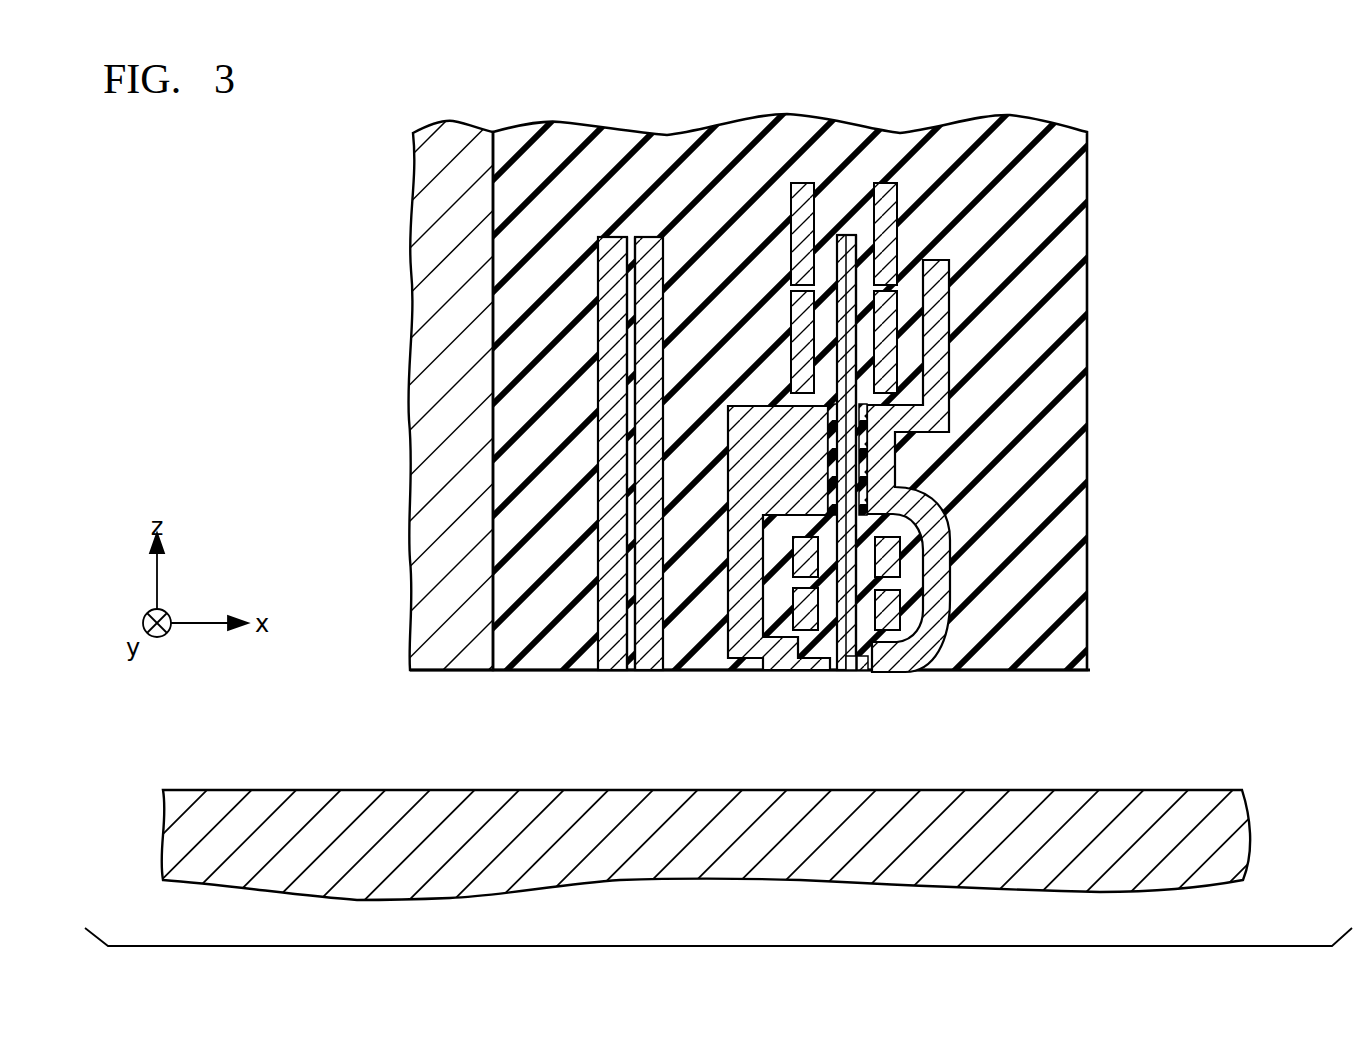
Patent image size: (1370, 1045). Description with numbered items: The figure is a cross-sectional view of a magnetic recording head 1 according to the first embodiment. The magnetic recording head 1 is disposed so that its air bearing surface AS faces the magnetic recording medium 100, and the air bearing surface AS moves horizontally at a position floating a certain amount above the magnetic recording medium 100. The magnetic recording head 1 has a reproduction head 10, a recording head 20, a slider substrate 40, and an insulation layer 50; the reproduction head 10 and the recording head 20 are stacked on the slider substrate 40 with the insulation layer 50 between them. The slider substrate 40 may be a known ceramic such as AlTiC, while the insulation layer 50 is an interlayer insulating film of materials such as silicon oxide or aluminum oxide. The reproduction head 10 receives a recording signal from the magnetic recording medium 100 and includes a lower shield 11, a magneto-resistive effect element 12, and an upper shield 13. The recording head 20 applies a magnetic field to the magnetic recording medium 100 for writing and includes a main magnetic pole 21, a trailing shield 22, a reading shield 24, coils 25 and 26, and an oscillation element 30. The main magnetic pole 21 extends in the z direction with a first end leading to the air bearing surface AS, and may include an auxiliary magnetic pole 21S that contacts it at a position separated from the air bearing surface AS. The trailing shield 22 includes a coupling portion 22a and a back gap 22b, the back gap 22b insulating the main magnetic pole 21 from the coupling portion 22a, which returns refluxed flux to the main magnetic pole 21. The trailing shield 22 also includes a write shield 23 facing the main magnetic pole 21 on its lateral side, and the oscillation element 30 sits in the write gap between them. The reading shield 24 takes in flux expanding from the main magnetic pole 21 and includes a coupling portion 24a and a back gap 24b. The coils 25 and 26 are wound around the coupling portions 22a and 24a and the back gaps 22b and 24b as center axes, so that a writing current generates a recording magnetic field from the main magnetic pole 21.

The magnetic recording head 1 is at (685, 404).
The reproduction head 10 is at (632, 507).
The lower shield 11 is at (612, 672).
The magneto-resistive effect element 12 is at (632, 482).
The upper shield 13 is at (655, 672).
The recording head 20 is at (947, 476).
The main magnetic pole 21 is at (976, 481).
The auxiliary magnetic pole 21S is at (858, 362).
The trailing shield 22 is at (1012, 494).
The coupling portion 22a is at (877, 470).
The back gap 22b is at (862, 500).
The write shield 23 is at (863, 672).
The reading shield 24 is at (947, 549).
The coupling portion 24a is at (800, 450).
The back gap 24b is at (833, 423).
The coil 25 is at (885, 200).
The coil 26 is at (808, 212).
The oscillation element 30 is at (850, 672).
The slider substrate 40 is at (456, 672).
The insulation layer 50 is at (576, 135).
The magnetic recording medium 100 is at (1246, 822).
The air bearing surface AS is at (1036, 672).